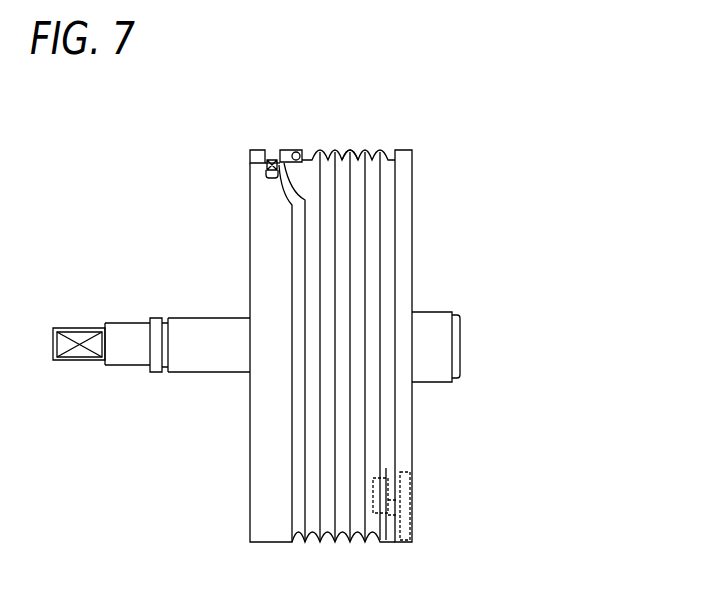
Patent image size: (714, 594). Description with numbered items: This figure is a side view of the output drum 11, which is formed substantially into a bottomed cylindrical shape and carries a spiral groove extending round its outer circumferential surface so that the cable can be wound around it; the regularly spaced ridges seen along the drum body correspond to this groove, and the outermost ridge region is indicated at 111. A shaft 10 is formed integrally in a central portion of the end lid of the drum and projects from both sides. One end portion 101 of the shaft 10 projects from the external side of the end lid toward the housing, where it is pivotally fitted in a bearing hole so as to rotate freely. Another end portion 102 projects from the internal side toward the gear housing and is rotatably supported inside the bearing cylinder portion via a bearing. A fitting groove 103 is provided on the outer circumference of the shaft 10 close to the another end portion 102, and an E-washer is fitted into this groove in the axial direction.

The shaft 10 is at (195, 372).
The output drum 11 is at (333, 136).
The fin tip 111 is at (356, 152).
The one end portion 101 is at (428, 312).
The another end portion 102 is at (78, 328).
The fitting groove 103 is at (165, 318).